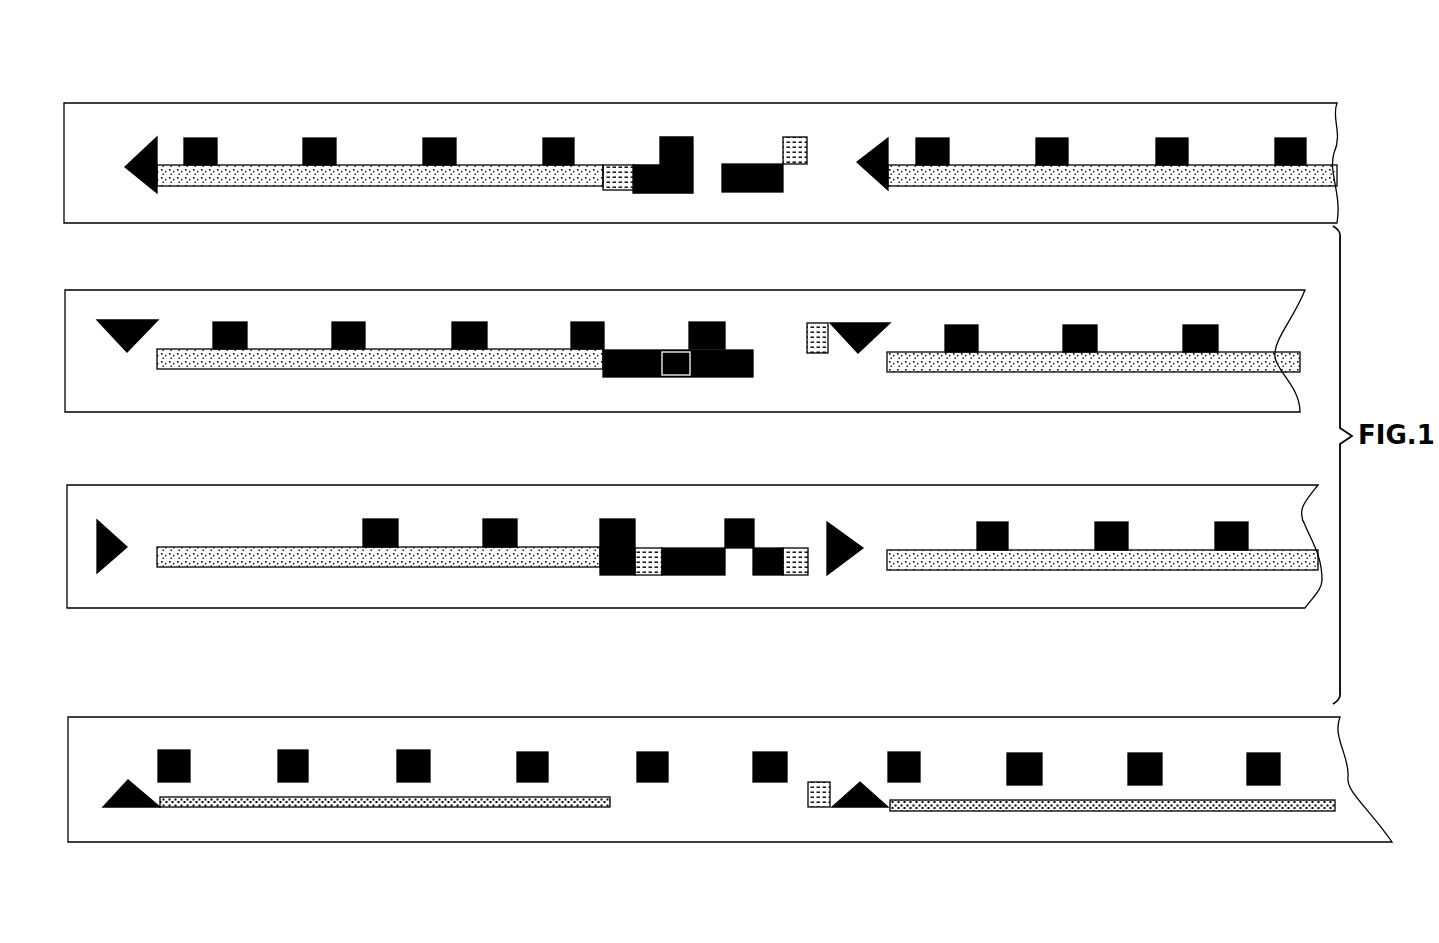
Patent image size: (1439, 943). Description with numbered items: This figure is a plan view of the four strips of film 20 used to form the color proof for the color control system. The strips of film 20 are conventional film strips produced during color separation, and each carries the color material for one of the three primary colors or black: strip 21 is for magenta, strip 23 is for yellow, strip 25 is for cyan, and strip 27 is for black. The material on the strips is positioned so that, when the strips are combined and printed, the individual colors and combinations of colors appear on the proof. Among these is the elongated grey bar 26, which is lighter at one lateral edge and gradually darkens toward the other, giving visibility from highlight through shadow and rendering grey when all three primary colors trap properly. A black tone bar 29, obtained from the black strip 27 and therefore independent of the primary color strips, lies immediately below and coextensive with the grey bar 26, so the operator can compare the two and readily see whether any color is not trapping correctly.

The strips of film 20 is at (1286, 86).
The magenta strip 21 is at (767, 316).
The yellow strip 23 is at (800, 120).
The cyan strip 25 is at (690, 507).
The grey bar 26 is at (385, 178).
The black strip 27 is at (787, 727).
The black tone bar 29 is at (455, 808).